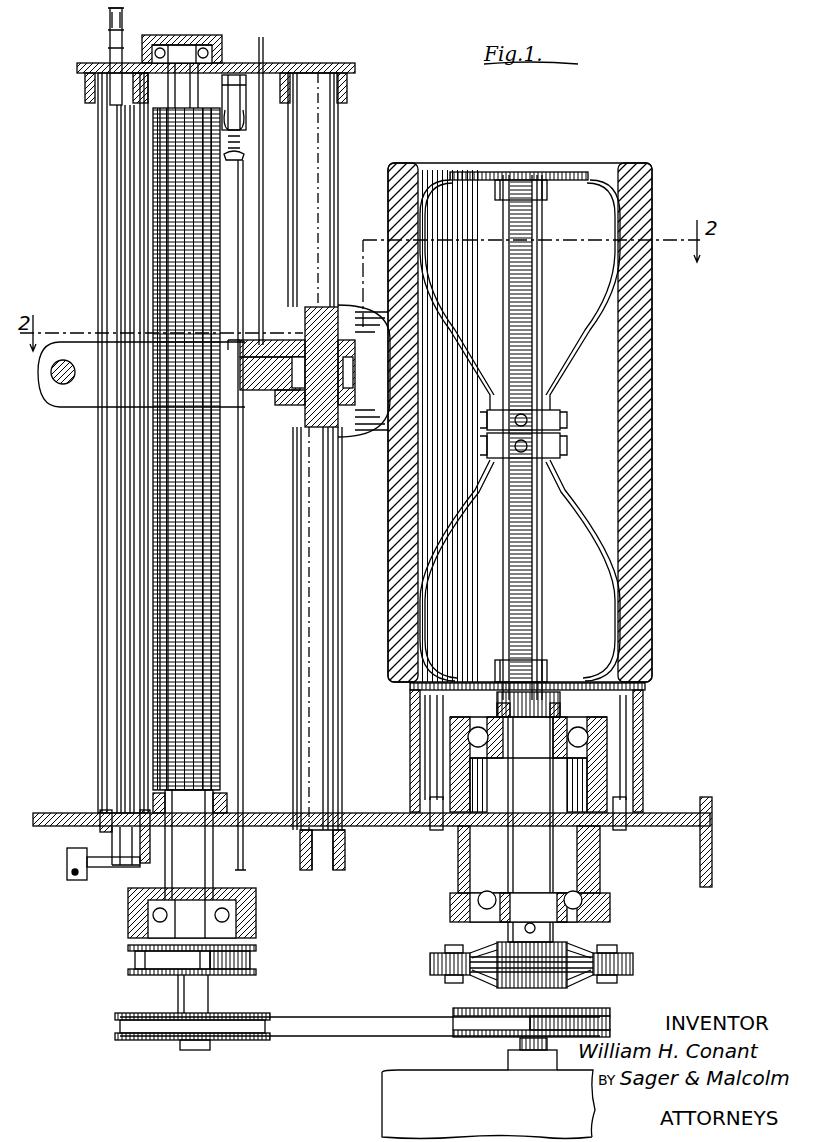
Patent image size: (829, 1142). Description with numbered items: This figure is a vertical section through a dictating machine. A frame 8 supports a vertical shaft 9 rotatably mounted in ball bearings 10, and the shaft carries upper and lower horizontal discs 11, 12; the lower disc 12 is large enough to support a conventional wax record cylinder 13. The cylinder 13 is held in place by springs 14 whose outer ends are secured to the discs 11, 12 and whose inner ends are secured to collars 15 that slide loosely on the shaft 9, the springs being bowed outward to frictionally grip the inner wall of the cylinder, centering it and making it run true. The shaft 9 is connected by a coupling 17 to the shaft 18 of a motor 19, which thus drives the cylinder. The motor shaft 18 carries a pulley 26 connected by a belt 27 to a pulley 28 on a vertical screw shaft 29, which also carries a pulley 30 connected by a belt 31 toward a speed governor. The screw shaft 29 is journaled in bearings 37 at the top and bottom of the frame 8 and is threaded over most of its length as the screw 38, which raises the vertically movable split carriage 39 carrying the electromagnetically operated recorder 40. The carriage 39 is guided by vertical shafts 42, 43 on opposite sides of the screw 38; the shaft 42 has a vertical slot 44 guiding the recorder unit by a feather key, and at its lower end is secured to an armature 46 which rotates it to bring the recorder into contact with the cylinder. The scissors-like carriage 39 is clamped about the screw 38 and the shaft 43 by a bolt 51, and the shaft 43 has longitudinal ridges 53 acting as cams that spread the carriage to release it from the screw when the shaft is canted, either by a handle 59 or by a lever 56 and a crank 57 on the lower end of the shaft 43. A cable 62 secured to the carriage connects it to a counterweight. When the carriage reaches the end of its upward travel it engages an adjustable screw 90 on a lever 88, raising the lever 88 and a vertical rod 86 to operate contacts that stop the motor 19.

The frame 8 is at (712, 812).
The vertical shaft 9 is at (530, 810).
The ball bearings 10 is at (608, 728).
The upper horizontal disc 11 is at (565, 170).
The lower horizontal disc 12 is at (622, 684).
The wax record cylinder 13 is at (652, 494).
The springs 14 is at (466, 332).
The collars 15 is at (560, 446).
The coupling 17 is at (633, 958).
The motor shaft 18 is at (528, 1046).
The motor 19 is at (385, 1085).
The pulley 26 is at (610, 1010).
The belt 27 is at (322, 1018).
The pulley 28 is at (268, 1012).
The vertical screw shaft 29 is at (182, 1000).
The pulley 30 is at (145, 960).
The belt 31 is at (256, 960).
The bearings 37 is at (165, 48).
The screw 38 is at (218, 553).
The split carriage 39 is at (77, 405).
The recorder 40 is at (375, 432).
The vertical shaft 42 is at (342, 517).
The vertical shaft 43 is at (100, 482).
The vertical slot 44 is at (300, 415).
The armature 46 is at (345, 862).
The bolt 51 is at (60, 383).
The longitudinal ridges 53 is at (118, 500).
The lever 56 is at (70, 878).
The crank 57 is at (100, 868).
The handle 59 is at (122, 21).
The cable 62 is at (264, 40).
The vertical rod 86 is at (244, 490).
The lever 88 is at (237, 100).
The screw 90 is at (244, 157).